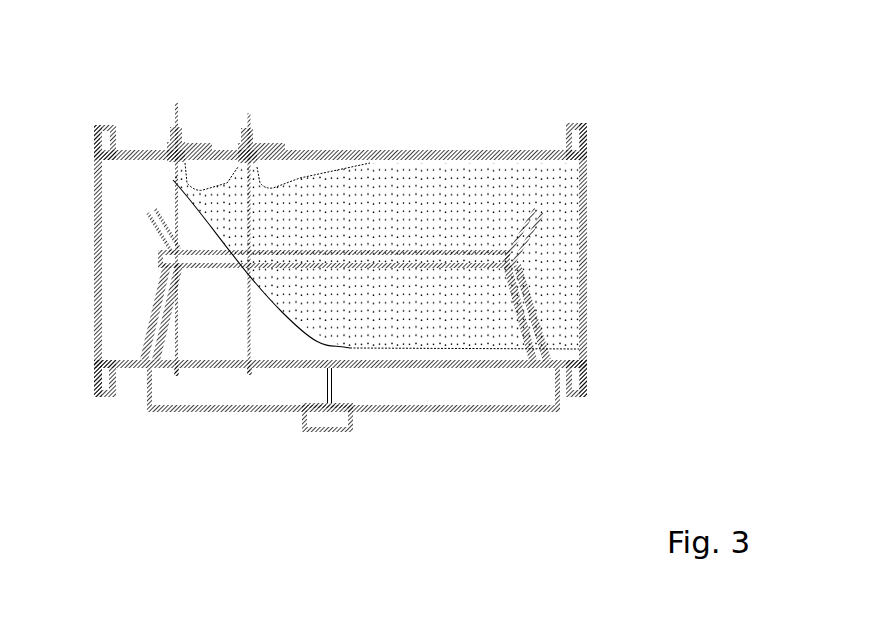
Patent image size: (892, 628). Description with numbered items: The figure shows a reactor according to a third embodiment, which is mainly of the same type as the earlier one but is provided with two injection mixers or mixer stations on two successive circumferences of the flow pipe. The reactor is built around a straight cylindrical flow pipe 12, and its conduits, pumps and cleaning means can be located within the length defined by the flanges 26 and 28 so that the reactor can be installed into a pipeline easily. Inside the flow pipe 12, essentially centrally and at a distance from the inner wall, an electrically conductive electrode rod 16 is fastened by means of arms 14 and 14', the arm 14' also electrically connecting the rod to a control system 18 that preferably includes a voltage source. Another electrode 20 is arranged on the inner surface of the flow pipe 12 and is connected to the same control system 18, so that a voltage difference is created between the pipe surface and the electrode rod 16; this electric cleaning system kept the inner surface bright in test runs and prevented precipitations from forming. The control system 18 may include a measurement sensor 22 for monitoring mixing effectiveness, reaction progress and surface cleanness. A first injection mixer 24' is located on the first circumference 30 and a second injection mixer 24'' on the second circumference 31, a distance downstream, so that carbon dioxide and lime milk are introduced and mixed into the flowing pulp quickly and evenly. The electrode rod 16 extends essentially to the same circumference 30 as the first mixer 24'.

The flow pipe 12 is at (313, 150).
The arms 14 is at (506, 180).
The arm 14' is at (132, 355).
The electrode rod 16 is at (380, 255).
The control system 18 is at (303, 422).
The electrode 20 is at (345, 372).
The measurement sensor 22 is at (558, 368).
The first injection mixer 24' is at (150, 188).
The second injection mixer 24'' is at (235, 187).
The flange 26 is at (106, 144).
The flange 28 is at (580, 128).
The first circumference 30 is at (176, 374).
The second circumference 31 is at (247, 372).